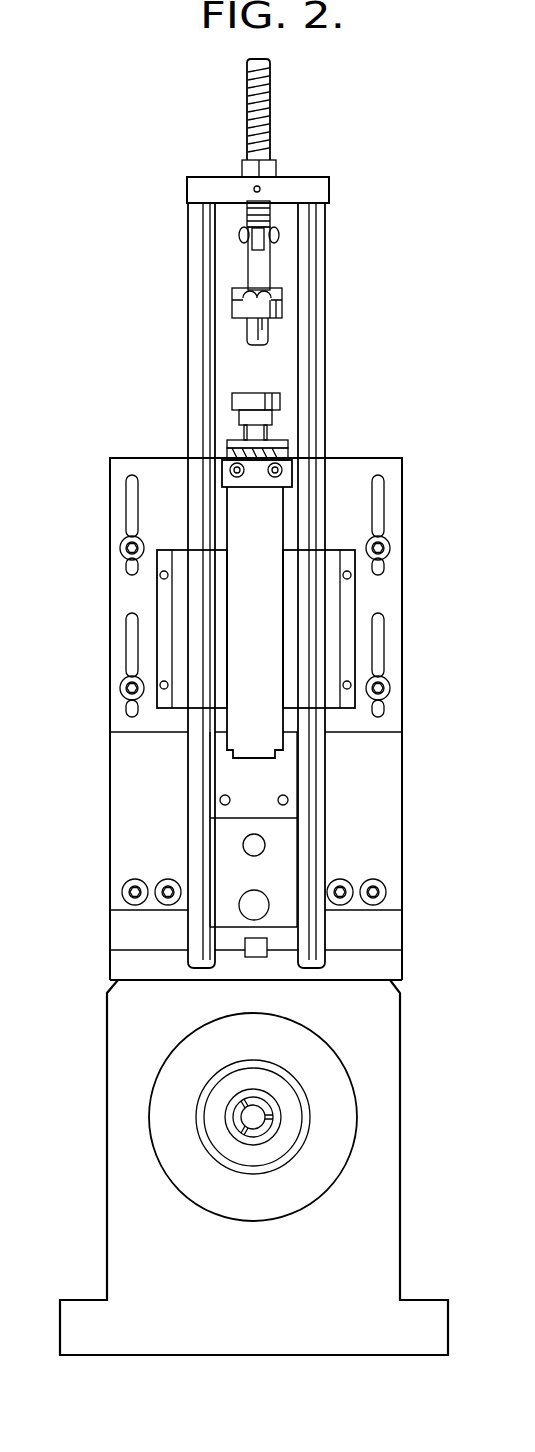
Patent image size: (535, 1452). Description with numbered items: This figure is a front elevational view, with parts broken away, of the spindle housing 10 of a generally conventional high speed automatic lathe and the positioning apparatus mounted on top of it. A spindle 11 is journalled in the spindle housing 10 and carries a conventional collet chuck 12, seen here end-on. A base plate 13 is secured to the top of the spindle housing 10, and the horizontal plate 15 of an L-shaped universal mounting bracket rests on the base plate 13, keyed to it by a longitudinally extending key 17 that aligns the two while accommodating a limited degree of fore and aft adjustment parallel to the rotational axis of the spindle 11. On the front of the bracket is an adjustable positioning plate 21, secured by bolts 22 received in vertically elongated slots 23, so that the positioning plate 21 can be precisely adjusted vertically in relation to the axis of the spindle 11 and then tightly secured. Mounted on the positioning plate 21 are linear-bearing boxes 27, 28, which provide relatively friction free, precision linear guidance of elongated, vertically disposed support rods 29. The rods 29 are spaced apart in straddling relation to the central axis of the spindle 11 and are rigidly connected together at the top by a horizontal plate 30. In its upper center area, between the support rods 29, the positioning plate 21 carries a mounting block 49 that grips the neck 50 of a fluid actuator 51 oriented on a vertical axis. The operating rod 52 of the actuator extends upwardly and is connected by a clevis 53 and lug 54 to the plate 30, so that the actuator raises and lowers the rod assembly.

The spindle housing 10 is at (385, 1034).
The spindle 11 is at (282, 1084).
The collet chuck 12 is at (267, 1130).
The base plate 13 is at (392, 965).
The horizontal plate 15 is at (390, 928).
The key 17 is at (245, 955).
The adjustable positioning plate 21 is at (403, 480).
The bolts 22 is at (390, 548).
The vertically elongated slots 23 is at (380, 630).
The linear-bearing box 27 is at (183, 597).
The linear-bearing box 28 is at (325, 612).
The support rods 29 is at (195, 332).
The horizontal plate 30 is at (287, 185).
The mounting block 49 is at (282, 442).
The neck 50 is at (270, 490).
The fluid actuator 51 is at (277, 585).
The operating rod 52 is at (268, 327).
The clevis 53 is at (262, 265).
The lug 54 is at (262, 218).